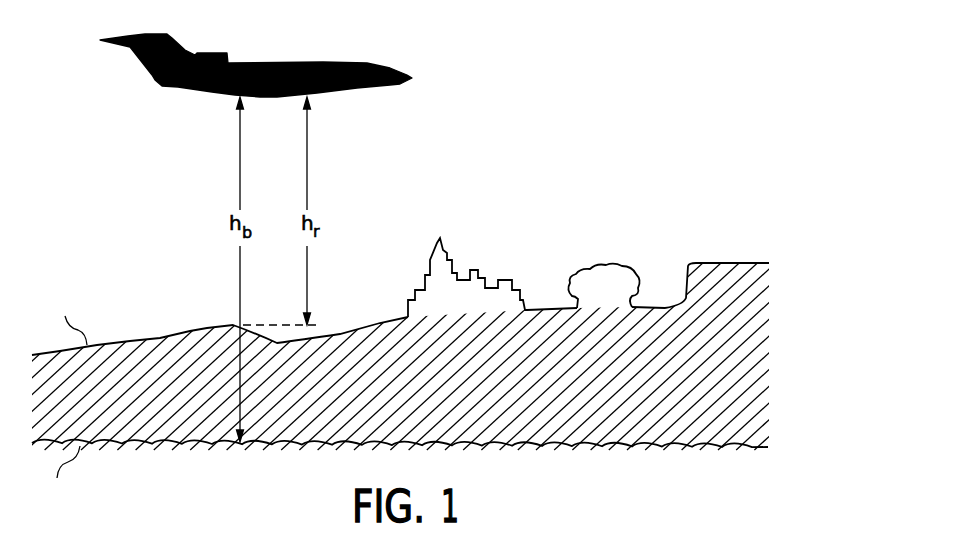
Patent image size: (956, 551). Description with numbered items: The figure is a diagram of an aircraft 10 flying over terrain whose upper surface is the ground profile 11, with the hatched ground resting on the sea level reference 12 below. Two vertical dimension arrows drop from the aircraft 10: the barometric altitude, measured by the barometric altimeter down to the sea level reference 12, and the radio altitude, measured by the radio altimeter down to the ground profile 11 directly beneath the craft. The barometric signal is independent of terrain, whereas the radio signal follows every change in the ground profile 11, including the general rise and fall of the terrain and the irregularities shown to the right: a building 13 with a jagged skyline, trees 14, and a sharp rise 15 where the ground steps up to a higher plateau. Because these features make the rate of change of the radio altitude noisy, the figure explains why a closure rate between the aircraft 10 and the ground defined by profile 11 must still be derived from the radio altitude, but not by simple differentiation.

The aircraft 10 is at (323, 62).
The ground profile 11 is at (155, 338).
The sea level reference 12 is at (148, 446).
The building 13 is at (480, 262).
The trees 14 is at (605, 264).
The sharp rise 15 is at (687, 265).